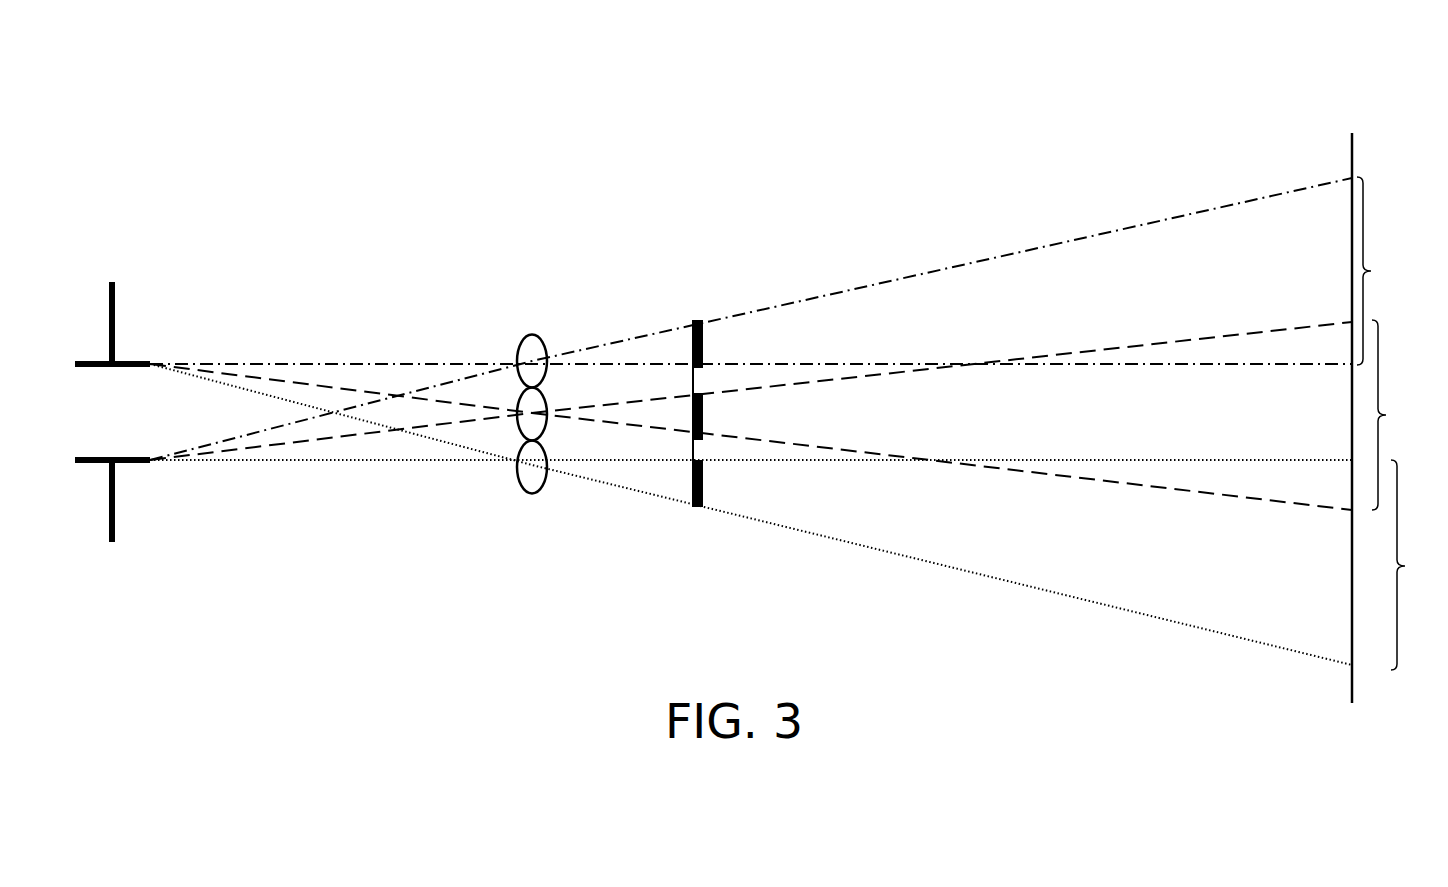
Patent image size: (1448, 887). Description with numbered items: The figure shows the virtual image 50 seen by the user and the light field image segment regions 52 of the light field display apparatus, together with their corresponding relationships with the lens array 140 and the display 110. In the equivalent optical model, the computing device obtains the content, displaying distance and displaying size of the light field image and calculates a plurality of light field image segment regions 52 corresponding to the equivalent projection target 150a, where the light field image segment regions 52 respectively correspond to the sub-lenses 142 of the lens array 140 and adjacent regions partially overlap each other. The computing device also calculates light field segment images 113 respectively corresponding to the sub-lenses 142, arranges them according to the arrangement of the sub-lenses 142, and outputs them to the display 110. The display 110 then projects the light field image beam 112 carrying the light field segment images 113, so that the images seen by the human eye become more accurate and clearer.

The virtual image 50 is at (1352, 155).
The light field image segment regions 52 is at (1397, 423).
The display 110 is at (792, 421).
The light field image beam 112 is at (1232, 333).
The light field segment images 113 is at (705, 345).
The lens array 140 is at (522, 388).
The sub-lenses 142 is at (530, 350).
The equivalent projection target 150a is at (95, 366).